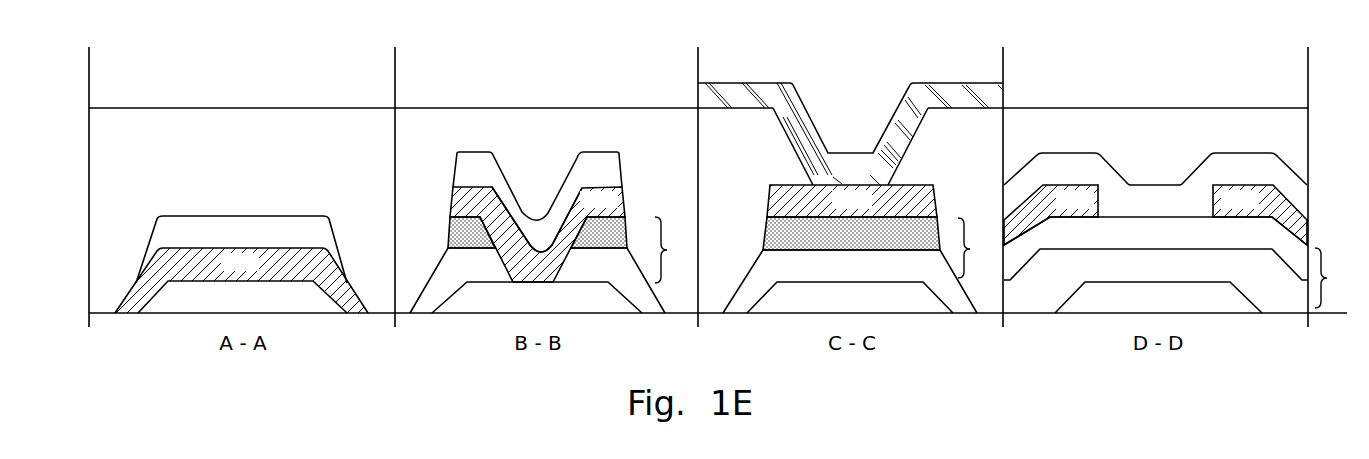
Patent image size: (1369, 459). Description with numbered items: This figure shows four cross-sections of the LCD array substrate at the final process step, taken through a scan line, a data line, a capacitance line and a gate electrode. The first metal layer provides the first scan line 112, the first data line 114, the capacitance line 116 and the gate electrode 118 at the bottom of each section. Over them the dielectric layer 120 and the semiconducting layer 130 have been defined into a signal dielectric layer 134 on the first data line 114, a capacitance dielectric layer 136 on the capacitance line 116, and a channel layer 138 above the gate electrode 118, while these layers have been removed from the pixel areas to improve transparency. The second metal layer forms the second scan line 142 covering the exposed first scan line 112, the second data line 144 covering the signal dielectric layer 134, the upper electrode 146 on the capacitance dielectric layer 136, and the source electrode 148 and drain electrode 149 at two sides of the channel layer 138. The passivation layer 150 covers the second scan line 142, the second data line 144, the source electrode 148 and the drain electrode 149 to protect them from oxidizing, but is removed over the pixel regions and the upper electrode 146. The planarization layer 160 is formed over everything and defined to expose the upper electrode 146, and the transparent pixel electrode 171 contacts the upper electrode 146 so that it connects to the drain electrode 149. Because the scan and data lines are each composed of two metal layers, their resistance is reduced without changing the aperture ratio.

The first scan line 112 is at (221, 308).
The first data line 114 is at (518, 308).
The capacitance line 116 is at (833, 307).
The gate electrode 118 is at (1136, 307).
The dielectric layer 120 is at (455, 277).
The semiconducting layer 130 is at (492, 242).
The signal dielectric layer 134 is at (677, 250).
The capacitance dielectric layer 136 is at (981, 248).
The channel layer 138 is at (1338, 278).
The second scan line 142 is at (221, 273).
The second data line 144 is at (579, 209).
The upper electrode 146 is at (833, 212).
The source electrode 148 is at (1056, 212).
The drain electrode 149 is at (1221, 212).
The passivation layer 150 is at (221, 243).
The planarization layer 160 is at (221, 138).
The pixel electrode 171 is at (835, 178).